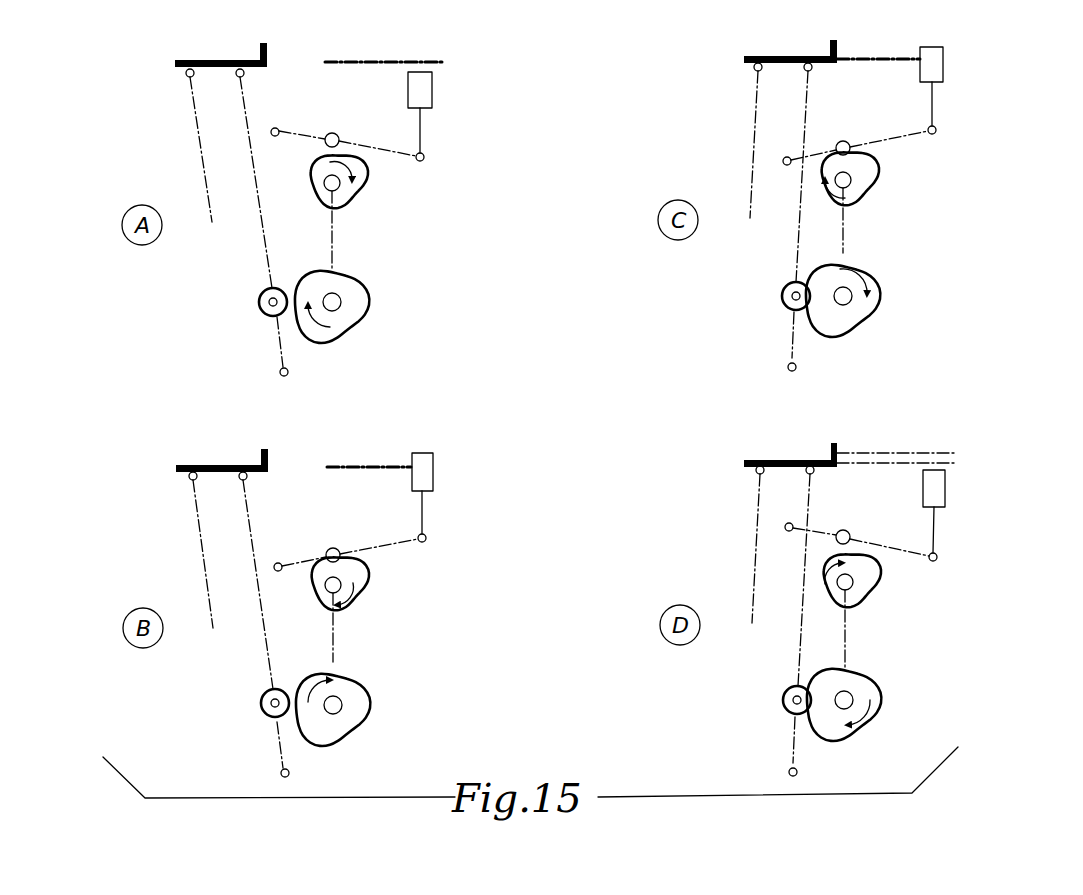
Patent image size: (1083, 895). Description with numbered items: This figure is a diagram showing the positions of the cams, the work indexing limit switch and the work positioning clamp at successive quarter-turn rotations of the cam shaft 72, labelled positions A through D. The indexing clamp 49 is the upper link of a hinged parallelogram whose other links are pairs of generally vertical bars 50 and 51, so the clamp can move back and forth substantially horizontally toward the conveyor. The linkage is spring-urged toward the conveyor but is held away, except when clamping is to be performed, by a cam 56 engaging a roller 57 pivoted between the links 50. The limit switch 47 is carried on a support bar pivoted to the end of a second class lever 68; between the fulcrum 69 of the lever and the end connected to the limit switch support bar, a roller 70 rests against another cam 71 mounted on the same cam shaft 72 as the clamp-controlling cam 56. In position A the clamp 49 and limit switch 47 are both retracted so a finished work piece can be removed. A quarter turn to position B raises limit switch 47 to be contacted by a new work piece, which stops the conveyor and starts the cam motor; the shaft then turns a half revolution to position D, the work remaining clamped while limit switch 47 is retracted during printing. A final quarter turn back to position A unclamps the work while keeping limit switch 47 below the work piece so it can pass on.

The limit switch 47 is at (432, 90).
The indexing clamp 49 is at (232, 60).
The generally vertical bars 50 is at (263, 248).
The generally vertical bars 51 is at (193, 108).
The cam 56 is at (362, 315).
The roller 57 is at (259, 302).
The second class lever 68 is at (391, 153).
The fulcrum 69 is at (278, 129).
The roller 70 is at (334, 133).
The cam 71 is at (362, 190).
The cam shaft 72 is at (334, 247).